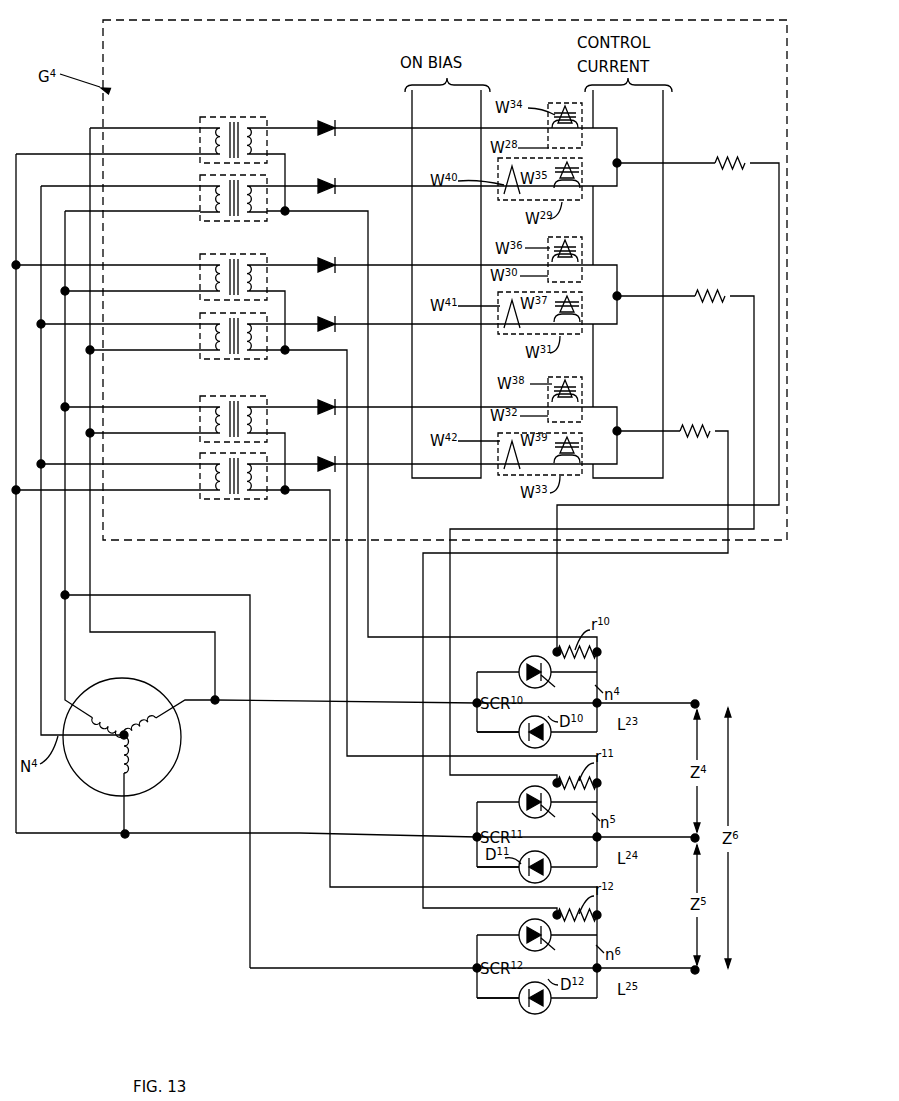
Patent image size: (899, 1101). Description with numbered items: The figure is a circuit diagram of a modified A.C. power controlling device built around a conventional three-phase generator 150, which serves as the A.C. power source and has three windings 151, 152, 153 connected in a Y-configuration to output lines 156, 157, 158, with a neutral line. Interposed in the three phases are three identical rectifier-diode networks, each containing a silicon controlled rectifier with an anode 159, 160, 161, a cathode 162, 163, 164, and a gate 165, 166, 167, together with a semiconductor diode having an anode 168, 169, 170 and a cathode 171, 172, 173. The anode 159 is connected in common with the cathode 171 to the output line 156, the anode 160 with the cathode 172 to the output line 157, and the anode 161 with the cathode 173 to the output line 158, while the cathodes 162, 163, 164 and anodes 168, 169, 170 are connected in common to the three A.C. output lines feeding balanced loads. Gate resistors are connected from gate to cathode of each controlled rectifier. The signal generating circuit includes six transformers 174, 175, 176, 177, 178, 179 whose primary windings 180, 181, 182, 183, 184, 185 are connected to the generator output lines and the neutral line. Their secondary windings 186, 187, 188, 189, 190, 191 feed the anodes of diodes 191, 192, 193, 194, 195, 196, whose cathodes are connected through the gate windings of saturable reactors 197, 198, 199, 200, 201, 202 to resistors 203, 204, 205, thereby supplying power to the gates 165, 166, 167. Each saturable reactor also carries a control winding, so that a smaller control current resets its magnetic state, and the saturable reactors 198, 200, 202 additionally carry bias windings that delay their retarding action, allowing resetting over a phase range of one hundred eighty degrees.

The three-phase generator 150 is at (80, 779).
The winding 151 is at (139, 735).
The winding 152 is at (118, 770).
The winding 153 is at (85, 714).
The output line 156 is at (361, 700).
The output line 157 is at (359, 836).
The output line 158 is at (358, 968).
The anode 159 is at (548, 687).
The anode 160 is at (546, 822).
The anode 161 is at (541, 953).
The cathode 162 is at (519, 655).
The cathode 163 is at (519, 790).
The cathode 164 is at (519, 922).
The gate 165 is at (597, 663).
The gate 166 is at (597, 799).
The gate 167 is at (597, 933).
The anode 168 is at (548, 737).
The anode 169 is at (556, 871).
The anode 170 is at (548, 1006).
The cathode 171 is at (520, 737).
The cathode 172 is at (520, 872).
The cathode 173 is at (515, 1006).
The transformer 174 is at (237, 117).
The transformer 175 is at (210, 221).
The transformer 176 is at (243, 253).
The transformer 177 is at (235, 360).
The transformer 178 is at (226, 396).
The transformer 179 is at (208, 499).
The primary winding 180 is at (212, 143).
The primary winding 181 is at (212, 195).
The primary winding 182 is at (212, 283).
The primary winding 183 is at (212, 331).
The primary winding 184 is at (212, 420).
The primary winding 185 is at (212, 477).
The secondary winding 186 is at (260, 143).
The secondary winding 187 is at (282, 218).
The secondary winding 188 is at (260, 283).
The secondary winding 189 is at (282, 350).
The secondary winding 190 is at (260, 420).
The secondary winding / diode 191 is at (284, 493).
The diode 192 is at (324, 184).
The diode 193 is at (324, 263).
The diode 194 is at (324, 322).
The diode 195 is at (324, 405).
The diode 196 is at (324, 462).
The saturable reactor 197 is at (557, 103).
The saturable reactor 198 is at (585, 186).
The saturable reactor 199 is at (584, 254).
The saturable reactor 200 is at (588, 332).
The saturable reactor 201 is at (584, 394).
The saturable reactor 202 is at (586, 476).
The resistor 203 is at (732, 160).
The resistor 204 is at (705, 292).
The resistor 205 is at (680, 434).